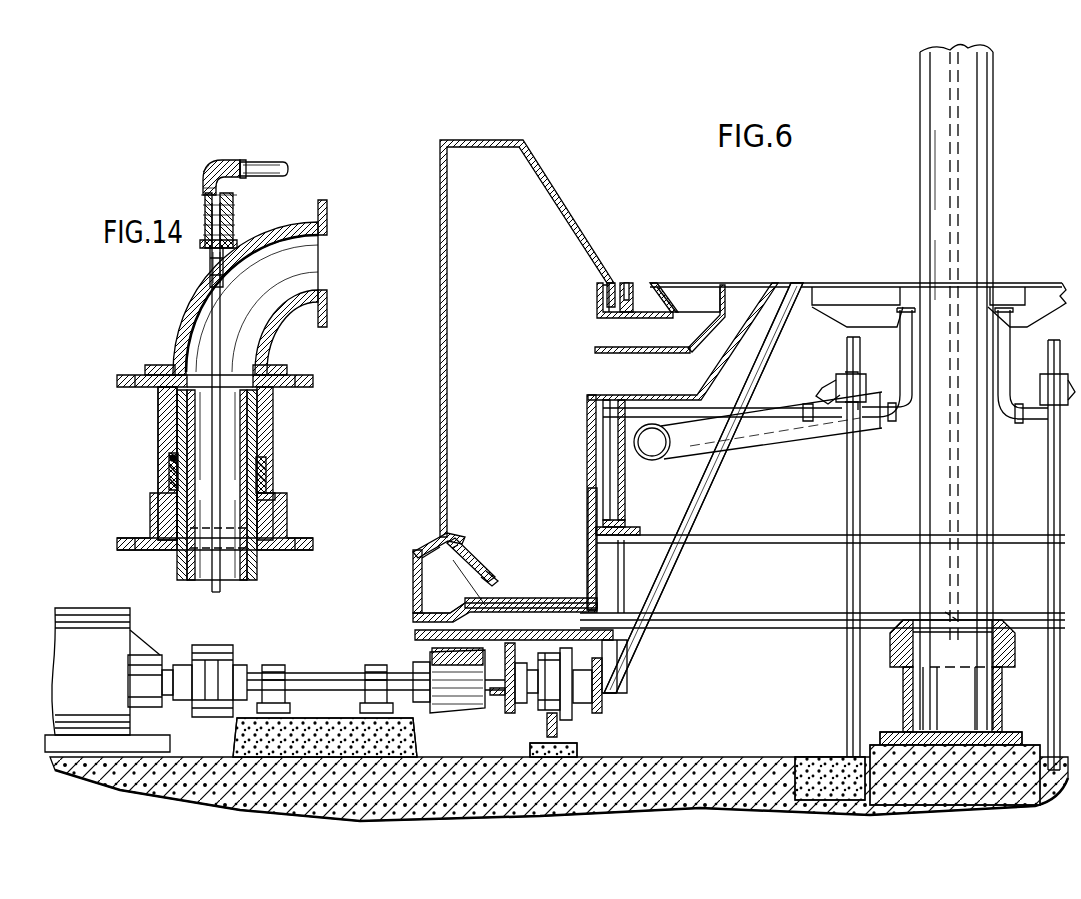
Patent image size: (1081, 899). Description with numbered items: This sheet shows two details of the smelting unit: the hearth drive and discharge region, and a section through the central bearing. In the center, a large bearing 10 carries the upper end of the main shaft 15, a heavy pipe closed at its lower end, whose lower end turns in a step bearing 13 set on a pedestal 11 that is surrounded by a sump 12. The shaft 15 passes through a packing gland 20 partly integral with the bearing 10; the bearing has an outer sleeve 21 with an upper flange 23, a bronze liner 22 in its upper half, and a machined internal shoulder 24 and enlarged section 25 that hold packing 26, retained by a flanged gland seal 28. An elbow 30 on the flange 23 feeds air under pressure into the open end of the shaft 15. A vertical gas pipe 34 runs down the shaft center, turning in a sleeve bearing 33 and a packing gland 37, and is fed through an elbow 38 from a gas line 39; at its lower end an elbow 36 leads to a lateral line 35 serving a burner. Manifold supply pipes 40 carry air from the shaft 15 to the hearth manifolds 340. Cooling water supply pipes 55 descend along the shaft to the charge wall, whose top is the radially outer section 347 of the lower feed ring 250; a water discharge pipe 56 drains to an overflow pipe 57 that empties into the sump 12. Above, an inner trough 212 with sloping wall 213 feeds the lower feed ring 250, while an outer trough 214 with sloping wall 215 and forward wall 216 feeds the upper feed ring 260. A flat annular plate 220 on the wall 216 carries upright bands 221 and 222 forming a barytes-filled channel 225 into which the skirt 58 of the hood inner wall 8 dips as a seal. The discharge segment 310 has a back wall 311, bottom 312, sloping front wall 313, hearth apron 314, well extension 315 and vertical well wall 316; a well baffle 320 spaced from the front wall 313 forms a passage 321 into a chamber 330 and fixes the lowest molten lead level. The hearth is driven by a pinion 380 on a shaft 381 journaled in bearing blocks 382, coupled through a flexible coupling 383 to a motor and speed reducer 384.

In FIG. 6, the inner wall 8 is at (580, 200).
In FIG. 14, the bearing 10 is at (158, 408).
In FIG. 6, the pedestal 11 is at (1035, 759).
In FIG. 6, the sump 12 is at (813, 759).
In FIG. 6, the step bearing 13 is at (903, 708).
In FIG. 14, the main shaft 15 is at (187, 568).
In FIG. 6, the main shaft 15 is at (993, 197).
In FIG. 14, the packing gland 20 is at (148, 508).
In FIG. 14, the outer sleeve 21 is at (158, 436).
In FIG. 14, the bronze liner 22 is at (258, 424).
In FIG. 14, the flange 23 is at (118, 380).
In FIG. 14, the internal shoulder 24 is at (172, 464).
In FIG. 14, the enlarged section 25 is at (266, 498).
In FIG. 14, the packing 26 is at (262, 472).
In FIG. 14, the flanged gland seal 28 is at (268, 552).
In FIG. 14, the elbow 30 is at (278, 336).
In FIG. 14, the sleeve bearing 33 is at (210, 272).
In FIG. 14, the vertical gas pipe 34 is at (215, 322).
In FIG. 6, the vertical gas pipe 34 is at (960, 482).
In FIG. 6, the lateral line 35 is at (750, 622).
In FIG. 6, the elbow 36 is at (958, 618).
In FIG. 14, the packing gland 37 is at (232, 222).
In FIG. 14, the elbow 38 is at (206, 170).
In FIG. 14, the gas line 39 is at (278, 162).
In FIG. 6, the manifold supply pipes 40 is at (766, 442).
In FIG. 6, the cooling water supply pipes 55 is at (878, 420).
In FIG. 6, the water discharge pipe 56 is at (822, 392).
In FIG. 6, the overflow pipe 57 is at (847, 501).
In FIG. 6, the skirt 58 is at (603, 304).
In FIG. 6, the inner trough 212 is at (797, 285).
In FIG. 6, the sloping inner wall 213 is at (702, 392).
In FIG. 6, the outer trough 214 is at (718, 297).
In FIG. 6, the sloping inner wall 215 is at (690, 345).
In FIG. 6, the forward wall 216 is at (693, 295).
In FIG. 6, the flat annular plate 220 is at (658, 294).
In FIG. 6, the upright band 221 is at (628, 283).
In FIG. 6, the upright band 222 is at (597, 292).
In FIG. 6, the channel 225 is at (605, 278).
In FIG. 6, the lower feed ring 250 is at (600, 395).
In FIG. 6, the upper feed ring 260 is at (600, 345).
In FIG. 6, the discharge segment 310 is at (410, 558).
In FIG. 6, the back wall 311 is at (587, 552).
In FIG. 6, the bottom 312 is at (522, 600).
In FIG. 6, the sloping front wall 313 is at (470, 562).
In FIG. 6, the hearth apron 314 is at (437, 540).
In FIG. 6, the well extension 315 is at (447, 614).
In FIG. 6, the vertical well wall 316 is at (412, 614).
In FIG. 6, the well baffle 320 is at (455, 557).
In FIG. 6, the passage 321 is at (490, 576).
In FIG. 6, the chamber 330 is at (437, 570).
In FIG. 6, the hearth manifolds 340 is at (655, 462).
In FIG. 6, the radially outer section 347 is at (617, 422).
In FIG. 6, the pinion 380 is at (448, 714).
In FIG. 6, the shaft 381 is at (305, 675).
In FIG. 6, the bearing blocks 382 is at (272, 667).
In FIG. 6, the flexible coupling 383 is at (210, 647).
In FIG. 6, the motor and speed reducer 384 is at (88, 609).